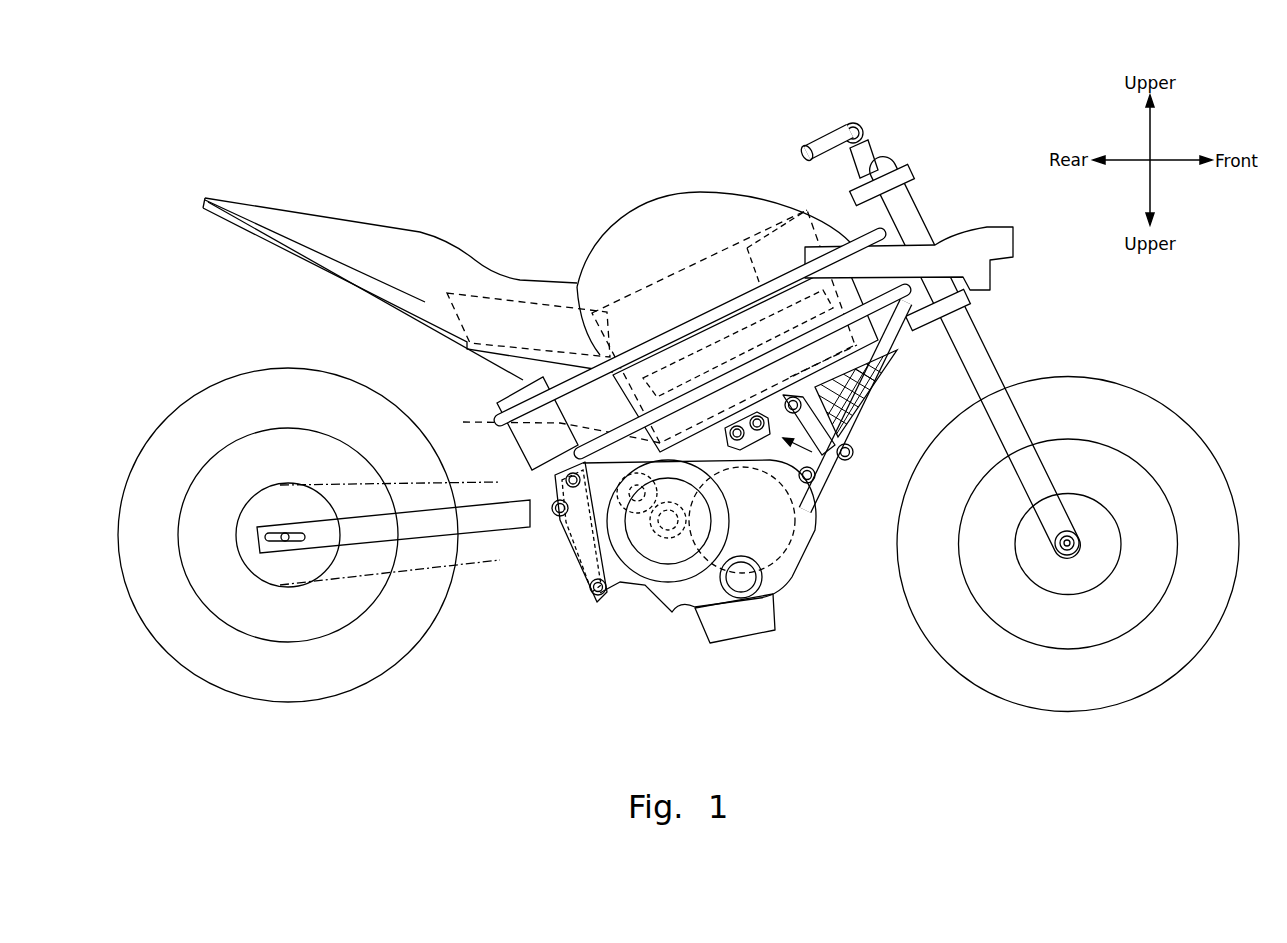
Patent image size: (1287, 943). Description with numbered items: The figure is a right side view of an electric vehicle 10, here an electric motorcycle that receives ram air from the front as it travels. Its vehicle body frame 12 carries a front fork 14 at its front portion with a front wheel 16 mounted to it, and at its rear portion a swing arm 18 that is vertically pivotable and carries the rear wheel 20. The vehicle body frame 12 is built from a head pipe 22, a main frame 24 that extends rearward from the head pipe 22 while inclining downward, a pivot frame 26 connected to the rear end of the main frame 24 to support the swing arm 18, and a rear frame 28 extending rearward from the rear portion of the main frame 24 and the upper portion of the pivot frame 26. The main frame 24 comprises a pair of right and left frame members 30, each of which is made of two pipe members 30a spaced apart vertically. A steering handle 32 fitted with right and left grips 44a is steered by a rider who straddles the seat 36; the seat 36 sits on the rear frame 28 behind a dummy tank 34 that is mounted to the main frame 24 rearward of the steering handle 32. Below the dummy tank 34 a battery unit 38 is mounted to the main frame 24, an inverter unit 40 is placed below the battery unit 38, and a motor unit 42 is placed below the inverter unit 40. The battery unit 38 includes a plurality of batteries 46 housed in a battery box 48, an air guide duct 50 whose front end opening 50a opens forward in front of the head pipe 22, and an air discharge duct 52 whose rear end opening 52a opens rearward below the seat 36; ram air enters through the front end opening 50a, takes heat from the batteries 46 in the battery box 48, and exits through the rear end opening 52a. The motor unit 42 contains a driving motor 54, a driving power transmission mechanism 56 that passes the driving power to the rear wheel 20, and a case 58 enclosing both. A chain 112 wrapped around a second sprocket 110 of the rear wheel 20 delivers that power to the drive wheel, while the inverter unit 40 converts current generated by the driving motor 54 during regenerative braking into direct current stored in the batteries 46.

The electric vehicle 10 is at (1001, 126).
The vehicle body frame 12 is at (723, 293).
The front fork 14 is at (977, 357).
The front wheel 16 is at (1173, 413).
The swing arm 18 is at (481, 523).
The rear wheel 20 is at (150, 438).
The head pipe 22 is at (883, 227).
The main frame 24 is at (677, 313).
The pivot frame 26 is at (533, 398).
The rear frame 28 is at (427, 307).
The frame member 30 is at (606, 354).
The pipe member 30a is at (524, 405).
The steering handle 32 is at (863, 143).
The dummy tank 34 is at (718, 217).
The seat 36 is at (425, 255).
The battery unit 38 is at (757, 223).
The inverter unit 40 is at (818, 490).
The motor unit 42 is at (643, 600).
The grip 44a is at (823, 140).
The battery 46 is at (693, 287).
The battery box 48 is at (632, 337).
The air guide duct 50 is at (980, 240).
The front end opening 50a is at (1013, 247).
The air discharge duct 52 is at (487, 310).
The rear end opening 52a is at (457, 345).
The driving motor 54 is at (757, 533).
The driving power transmission mechanism 56 is at (683, 600).
The case 58 is at (673, 560).
The second sprocket 110 is at (280, 577).
The chain 112 is at (417, 572).